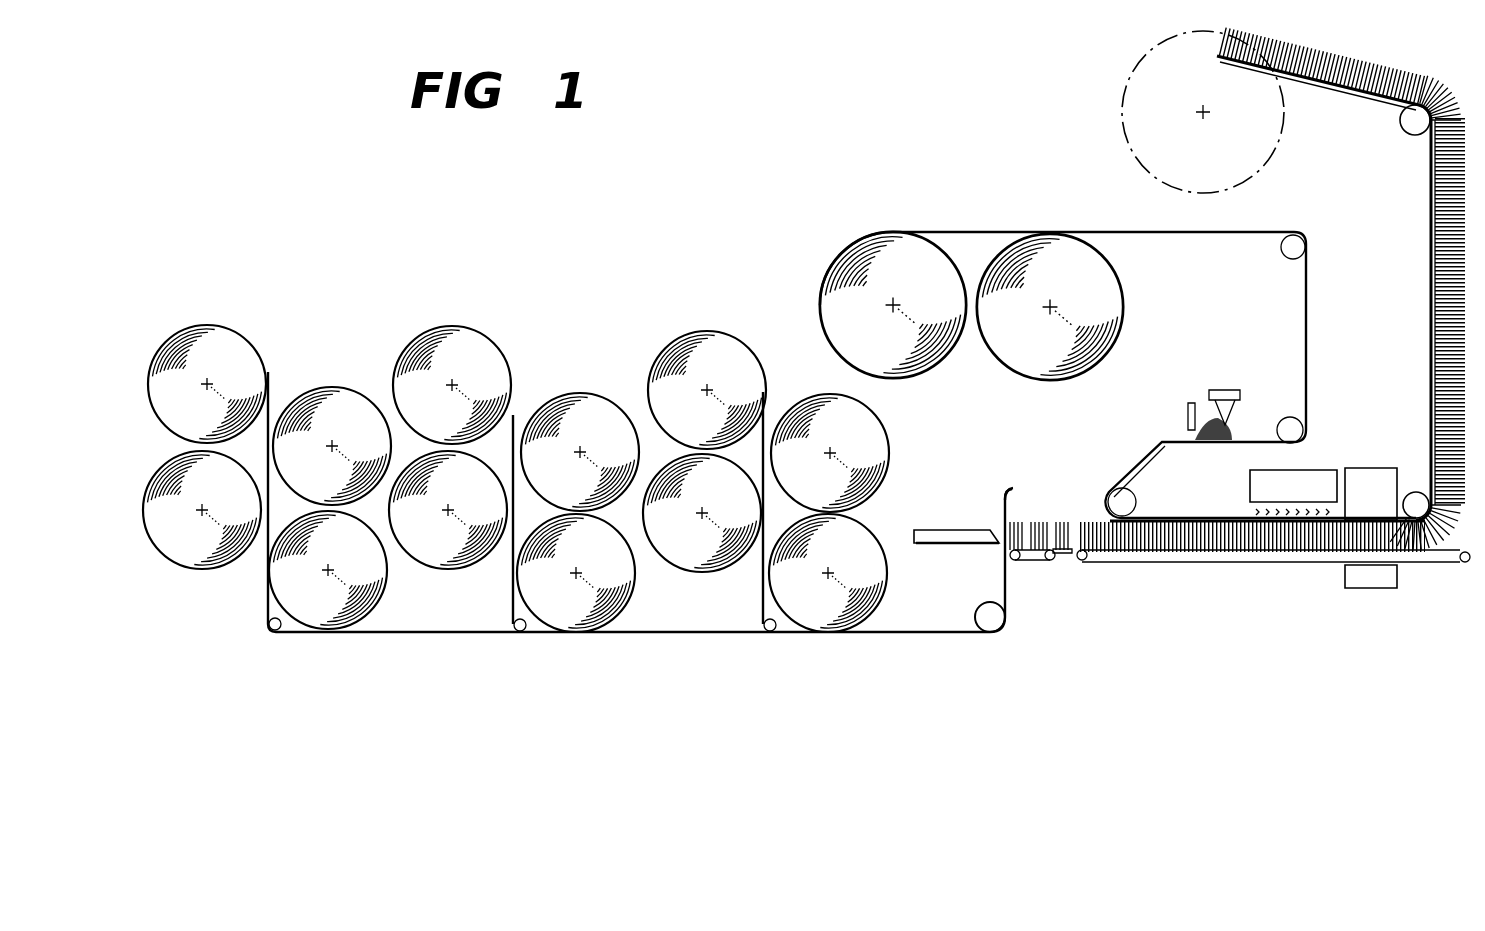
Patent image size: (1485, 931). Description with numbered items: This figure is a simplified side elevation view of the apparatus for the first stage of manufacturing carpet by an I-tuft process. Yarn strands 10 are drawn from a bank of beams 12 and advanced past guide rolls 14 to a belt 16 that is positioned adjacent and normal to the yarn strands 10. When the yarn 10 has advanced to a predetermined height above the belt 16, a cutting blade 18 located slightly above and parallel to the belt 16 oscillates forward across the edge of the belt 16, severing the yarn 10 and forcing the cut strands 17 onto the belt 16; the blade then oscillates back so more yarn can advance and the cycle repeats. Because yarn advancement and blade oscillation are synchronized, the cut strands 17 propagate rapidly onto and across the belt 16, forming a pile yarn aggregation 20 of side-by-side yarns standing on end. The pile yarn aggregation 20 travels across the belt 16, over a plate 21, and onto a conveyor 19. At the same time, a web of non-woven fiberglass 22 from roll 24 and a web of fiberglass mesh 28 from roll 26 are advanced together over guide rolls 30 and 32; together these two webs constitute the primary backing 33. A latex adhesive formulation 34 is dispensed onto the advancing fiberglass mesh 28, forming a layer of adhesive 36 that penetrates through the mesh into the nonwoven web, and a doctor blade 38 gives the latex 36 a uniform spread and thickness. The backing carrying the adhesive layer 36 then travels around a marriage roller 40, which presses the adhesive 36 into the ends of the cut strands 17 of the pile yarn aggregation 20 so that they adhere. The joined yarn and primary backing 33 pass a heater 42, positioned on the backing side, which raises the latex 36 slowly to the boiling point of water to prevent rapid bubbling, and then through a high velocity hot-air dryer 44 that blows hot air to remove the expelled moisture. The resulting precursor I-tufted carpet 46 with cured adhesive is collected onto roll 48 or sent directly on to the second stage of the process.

The yarn strands 10 is at (400, 633).
The beams 12 is at (218, 330).
The guide rolls 14 is at (280, 630).
The belt 16 is at (1030, 557).
The cut strands 17 is at (1025, 481).
The cutting blade 18 is at (923, 537).
The conveyor 19 is at (1127, 555).
The pile yarn aggregation 20 is at (1208, 550).
The plate 21 is at (1068, 553).
The web of non-woven fiberglass 22 is at (972, 230).
The roll 24 is at (830, 270).
The roll 26 is at (1127, 300).
The web of fiberglass mesh 28 is at (1155, 235).
The guide roll 30 is at (1297, 260).
The guide roll 32 is at (1292, 418).
The primary backing 33 is at (1310, 347).
The latex adhesive formulation 34 is at (1233, 430).
The layer of adhesive 36 is at (1162, 438).
The doctor blade 38 is at (1190, 402).
The marriage roller 40 is at (1133, 503).
The heater 42 is at (1308, 470).
The high velocity hot-air dryer 44 is at (1368, 468).
The precursor I-tufted carpet 46 is at (1435, 303).
The roll 48 is at (1265, 138).